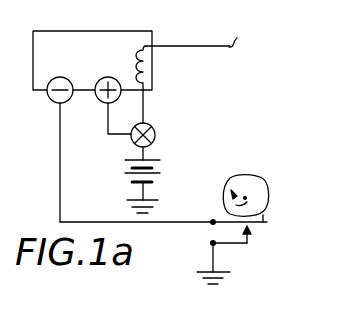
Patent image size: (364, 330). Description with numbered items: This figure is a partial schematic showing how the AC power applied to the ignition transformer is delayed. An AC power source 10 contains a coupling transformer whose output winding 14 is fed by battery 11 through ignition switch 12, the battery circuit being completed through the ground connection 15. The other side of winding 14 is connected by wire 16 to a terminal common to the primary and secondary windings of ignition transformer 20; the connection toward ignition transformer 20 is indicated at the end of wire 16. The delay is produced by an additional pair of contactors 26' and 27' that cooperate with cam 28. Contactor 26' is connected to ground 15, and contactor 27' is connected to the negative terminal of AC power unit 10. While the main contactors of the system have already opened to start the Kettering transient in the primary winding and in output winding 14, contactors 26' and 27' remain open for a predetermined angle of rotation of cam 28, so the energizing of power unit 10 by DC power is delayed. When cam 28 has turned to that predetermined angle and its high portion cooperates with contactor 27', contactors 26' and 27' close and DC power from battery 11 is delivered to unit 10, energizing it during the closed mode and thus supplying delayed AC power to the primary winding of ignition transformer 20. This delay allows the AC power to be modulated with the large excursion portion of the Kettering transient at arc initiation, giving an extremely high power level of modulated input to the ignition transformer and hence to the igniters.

The AC power source 10 is at (79, 62).
The battery 11 is at (124, 160).
The ignition switch 12 is at (154, 128).
The output winding 14 is at (145, 66).
The ground 15 is at (148, 199).
The wire 16 is at (199, 33).
The ignition transformer 20 is at (262, 46).
The contactor 26' is at (257, 259).
The contactor 27' is at (259, 237).
The cam 28 is at (268, 193).